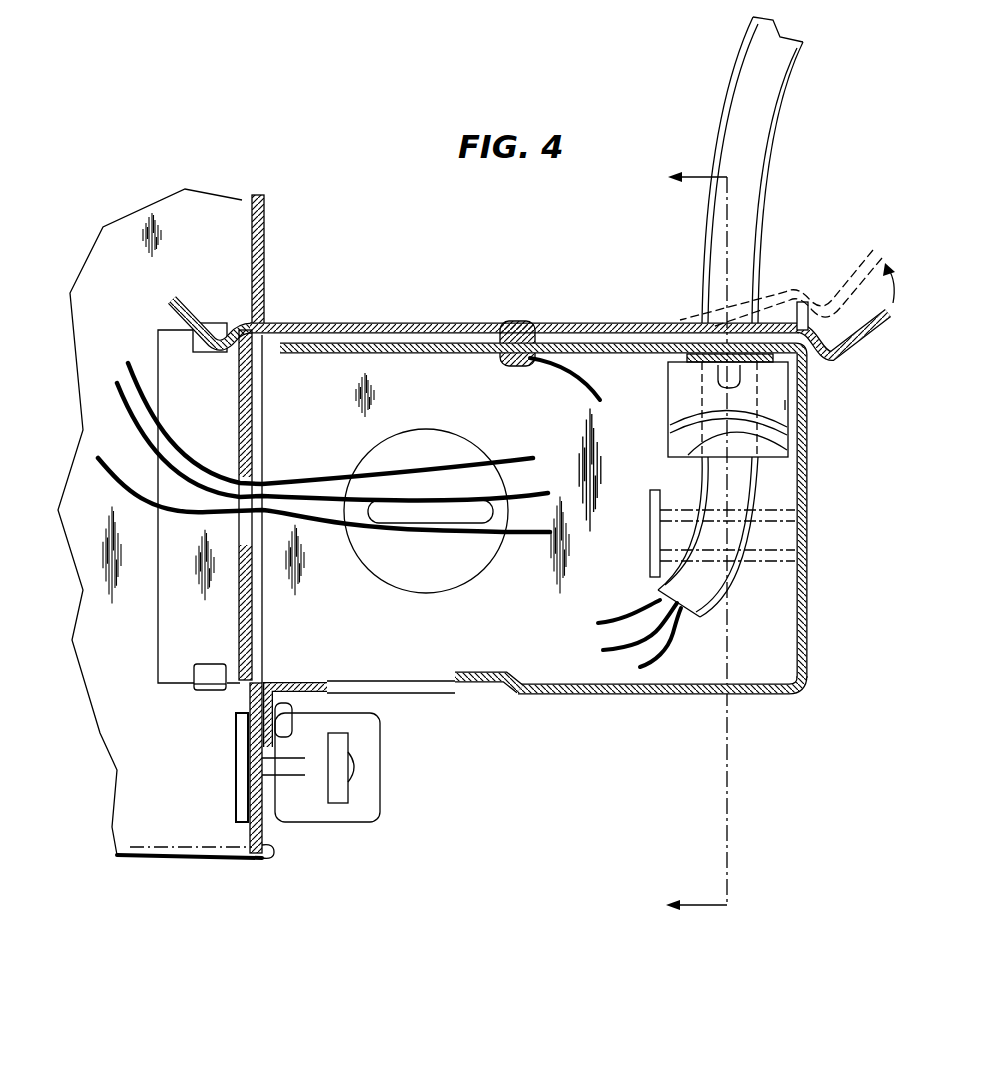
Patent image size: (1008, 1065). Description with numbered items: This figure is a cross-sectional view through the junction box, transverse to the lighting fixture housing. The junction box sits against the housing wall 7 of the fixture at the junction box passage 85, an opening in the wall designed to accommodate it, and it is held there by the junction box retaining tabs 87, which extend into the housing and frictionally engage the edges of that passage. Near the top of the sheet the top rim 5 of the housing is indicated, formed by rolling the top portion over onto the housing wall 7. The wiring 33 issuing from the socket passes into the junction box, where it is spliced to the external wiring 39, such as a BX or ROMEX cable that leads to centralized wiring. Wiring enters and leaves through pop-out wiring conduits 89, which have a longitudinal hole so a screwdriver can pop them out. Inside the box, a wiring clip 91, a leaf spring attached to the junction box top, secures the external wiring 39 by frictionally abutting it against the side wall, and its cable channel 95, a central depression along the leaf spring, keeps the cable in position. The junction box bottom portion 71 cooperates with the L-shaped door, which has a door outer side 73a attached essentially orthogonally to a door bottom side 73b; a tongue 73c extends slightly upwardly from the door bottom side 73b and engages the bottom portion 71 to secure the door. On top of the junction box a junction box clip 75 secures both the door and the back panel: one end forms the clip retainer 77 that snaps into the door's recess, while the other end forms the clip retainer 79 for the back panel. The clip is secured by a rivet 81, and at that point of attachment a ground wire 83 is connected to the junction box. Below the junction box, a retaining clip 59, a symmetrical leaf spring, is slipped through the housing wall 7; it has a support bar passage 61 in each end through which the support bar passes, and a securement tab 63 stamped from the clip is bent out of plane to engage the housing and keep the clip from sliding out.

The housing wall 7 is at (266, 215).
The junction box retaining tabs 87 is at (215, 322).
The clip retainer 79 is at (162, 312).
The junction box clip 75 is at (338, 324).
The clip retainer 77 is at (858, 352).
The rivet 81 is at (515, 320).
The ground wire 83 is at (575, 372).
The junction box passage 85 is at (262, 410).
The wiring 33 is at (125, 421).
The pop-out wiring conduits 89 is at (436, 573).
The external wiring 39 is at (773, 130).
The top rim 5 is at (684, 543).
The wiring clip 91 is at (790, 400).
The cable channel 95 is at (757, 433).
The door outer side 73a is at (805, 612).
The door bottom side 73b is at (596, 697).
The tongue 73c is at (490, 672).
The bottom portion 71 is at (300, 682).
The retaining clip 59 is at (382, 757).
The securement tab 63 is at (285, 778).
The support bar passage 61 is at (335, 805).